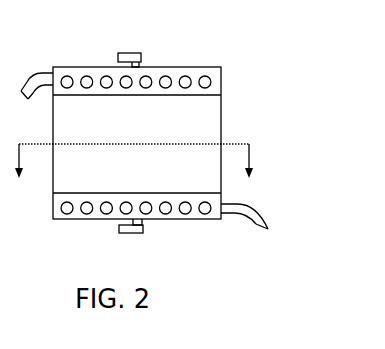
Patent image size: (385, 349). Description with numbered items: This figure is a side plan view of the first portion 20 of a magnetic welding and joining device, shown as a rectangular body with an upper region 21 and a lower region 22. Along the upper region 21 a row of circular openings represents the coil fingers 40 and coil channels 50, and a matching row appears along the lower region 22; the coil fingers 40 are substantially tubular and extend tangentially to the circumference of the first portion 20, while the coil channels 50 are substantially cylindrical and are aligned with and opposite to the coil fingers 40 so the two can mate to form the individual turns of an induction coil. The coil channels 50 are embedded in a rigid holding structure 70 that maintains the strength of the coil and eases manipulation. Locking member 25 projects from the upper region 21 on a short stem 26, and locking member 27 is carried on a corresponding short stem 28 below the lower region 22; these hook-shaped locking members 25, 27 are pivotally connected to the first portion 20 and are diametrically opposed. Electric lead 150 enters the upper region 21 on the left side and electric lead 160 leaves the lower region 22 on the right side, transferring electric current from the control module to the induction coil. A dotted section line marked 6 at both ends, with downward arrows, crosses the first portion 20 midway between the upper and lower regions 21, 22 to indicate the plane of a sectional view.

The first portion 20 is at (230, 68).
The upper region 21 is at (62, 68).
The lower region 22 is at (221, 222).
The locking member 25 is at (128, 57).
The upper terminal stem 26 is at (139, 63).
The locking member 27 is at (142, 225).
The lower terminal tab 28 is at (133, 233).
The coil fingers 40 is at (63, 213).
The coil channels 50 is at (85, 213).
The holding structure 70 is at (95, 73).
The electric lead 150 is at (37, 77).
The electric lead 160 is at (258, 230).
The section line 6- 6 is at (139, 161).